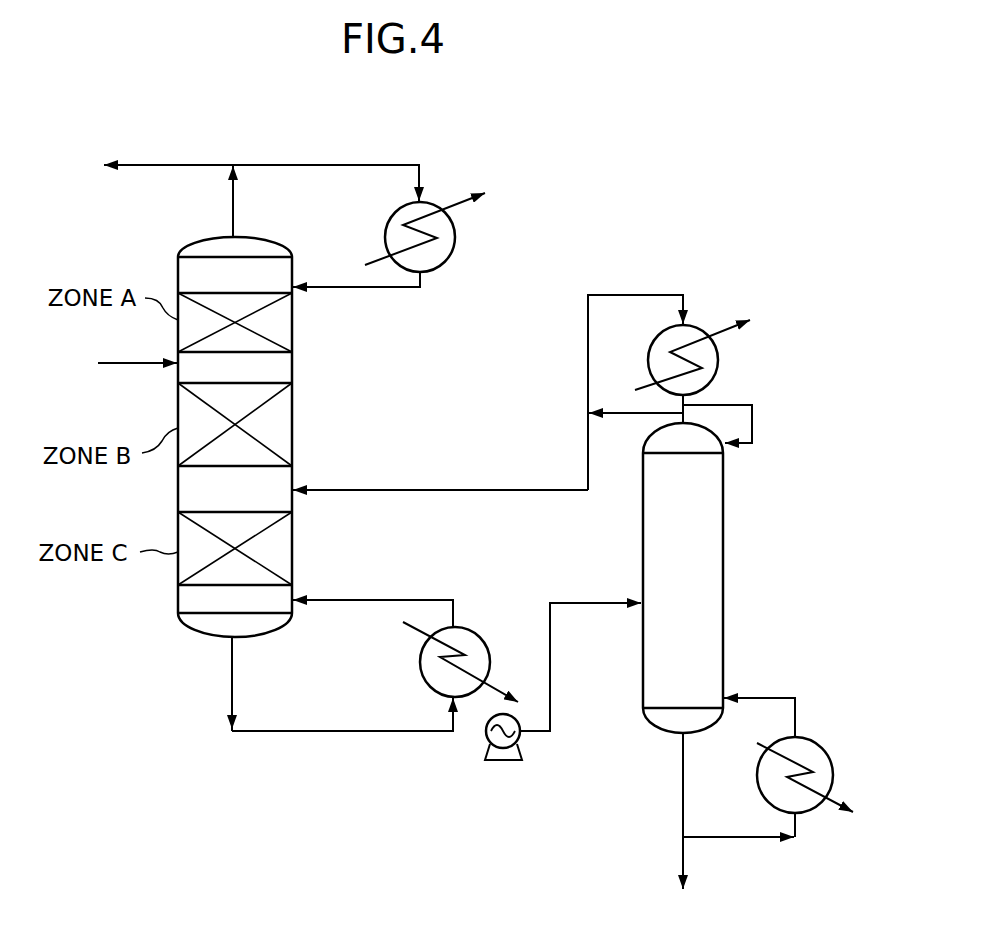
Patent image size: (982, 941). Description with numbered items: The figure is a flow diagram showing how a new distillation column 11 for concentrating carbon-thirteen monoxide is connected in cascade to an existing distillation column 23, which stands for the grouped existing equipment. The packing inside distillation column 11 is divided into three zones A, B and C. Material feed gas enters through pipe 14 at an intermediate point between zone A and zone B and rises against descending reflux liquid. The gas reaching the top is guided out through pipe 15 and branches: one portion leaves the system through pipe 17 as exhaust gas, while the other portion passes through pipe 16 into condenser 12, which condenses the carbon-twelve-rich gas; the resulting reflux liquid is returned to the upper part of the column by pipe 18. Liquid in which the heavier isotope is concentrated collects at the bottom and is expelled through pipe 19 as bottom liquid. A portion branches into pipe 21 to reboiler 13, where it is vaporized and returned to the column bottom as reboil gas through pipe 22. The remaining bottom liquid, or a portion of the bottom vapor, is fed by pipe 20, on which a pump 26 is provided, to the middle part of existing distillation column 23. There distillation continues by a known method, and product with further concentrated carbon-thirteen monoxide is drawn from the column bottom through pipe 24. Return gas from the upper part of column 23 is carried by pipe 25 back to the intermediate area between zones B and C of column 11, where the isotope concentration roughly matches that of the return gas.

The distillation column 11 is at (292, 370).
The condenser 12 is at (455, 237).
The reboiler 13 is at (478, 632).
The pipe 14 is at (126, 365).
The pipe 15 is at (235, 195).
The pipe 16 is at (387, 165).
The pipe 17 is at (158, 165).
The pipe 18 is at (330, 287).
The pipe 19 is at (233, 660).
The pipe 20 is at (537, 734).
The pipe 21 is at (446, 722).
The pipe 22 is at (352, 602).
The existing distillation column 23 is at (723, 660).
The pipe 24 is at (684, 750).
The pipe 25 is at (515, 490).
The pump 26 is at (484, 740).